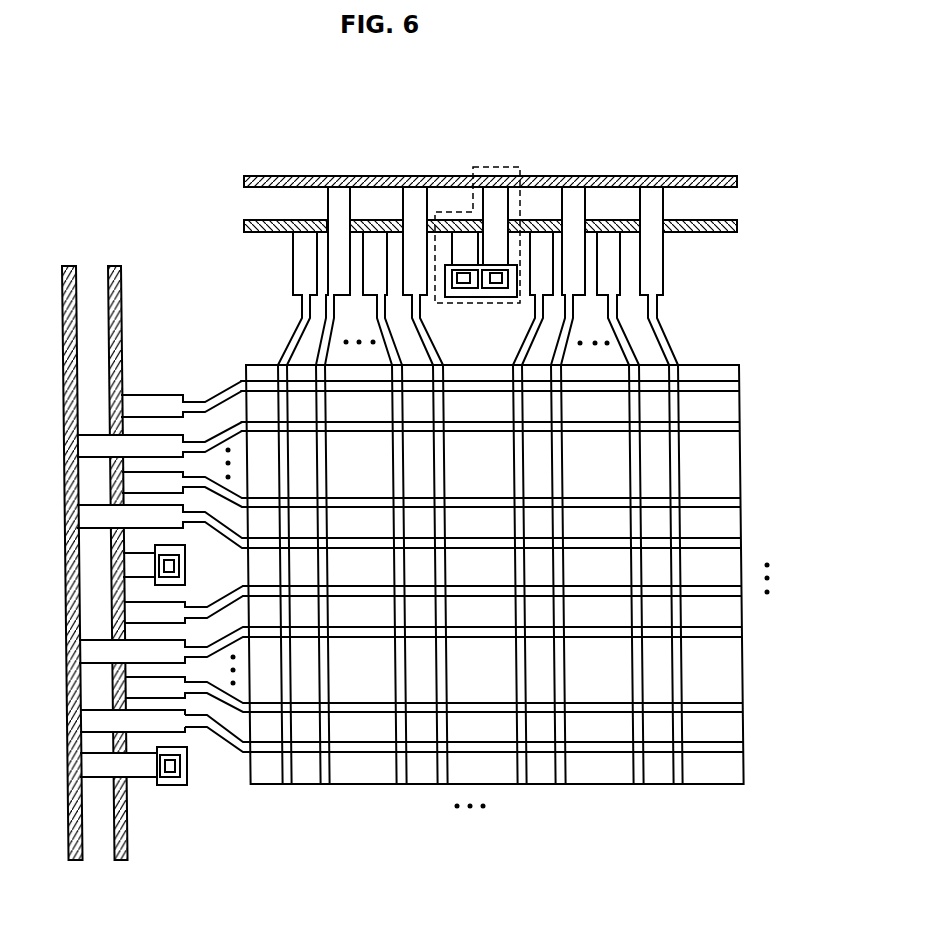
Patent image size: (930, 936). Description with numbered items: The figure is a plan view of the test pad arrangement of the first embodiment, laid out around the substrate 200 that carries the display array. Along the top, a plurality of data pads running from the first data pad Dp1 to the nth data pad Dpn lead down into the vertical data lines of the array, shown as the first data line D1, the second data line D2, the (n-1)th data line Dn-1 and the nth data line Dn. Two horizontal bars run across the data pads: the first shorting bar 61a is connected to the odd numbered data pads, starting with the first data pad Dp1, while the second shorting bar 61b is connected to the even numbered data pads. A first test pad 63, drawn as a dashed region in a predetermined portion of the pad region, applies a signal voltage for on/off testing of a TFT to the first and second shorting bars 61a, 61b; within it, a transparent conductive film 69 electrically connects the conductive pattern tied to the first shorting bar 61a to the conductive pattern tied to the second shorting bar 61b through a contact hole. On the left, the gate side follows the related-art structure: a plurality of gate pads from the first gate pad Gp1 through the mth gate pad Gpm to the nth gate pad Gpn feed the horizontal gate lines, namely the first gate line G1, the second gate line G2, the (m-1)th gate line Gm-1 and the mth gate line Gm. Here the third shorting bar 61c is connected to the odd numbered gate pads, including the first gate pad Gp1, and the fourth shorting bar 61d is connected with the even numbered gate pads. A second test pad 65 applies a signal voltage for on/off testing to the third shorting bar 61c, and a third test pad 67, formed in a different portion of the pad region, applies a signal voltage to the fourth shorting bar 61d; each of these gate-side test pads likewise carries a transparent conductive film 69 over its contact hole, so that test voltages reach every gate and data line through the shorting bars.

The first shorting bar 61a is at (259, 233).
The second shorting bar 61b is at (265, 176).
The third shorting bar 61c is at (114, 266).
The fourth shorting bar 61d is at (70, 266).
The first test pad 63 is at (497, 167).
The second test pad 65 is at (132, 563).
The third test pad 67 is at (146, 778).
The transparent conductive film 69 is at (484, 300).
The substrate 200 is at (732, 787).
The first data pad Dp1 is at (293, 295).
The nth data pad Dpn is at (657, 252).
The first gate pad Gp1 is at (150, 402).
The nth gate pad Gpn is at (112, 723).
The mth gate pad Gpm is at (180, 728).
The first gate line G1 is at (505, 392).
The second gate line G2 is at (506, 434).
The (m-1)th gate line Gm-1 is at (526, 709).
The mth gate line Gm is at (512, 752).
The first data line D1 is at (287, 590).
The second data line D2 is at (328, 590).
The (n-1)th data line Dn-1 is at (624, 592).
The nth data line Dn is at (682, 592).